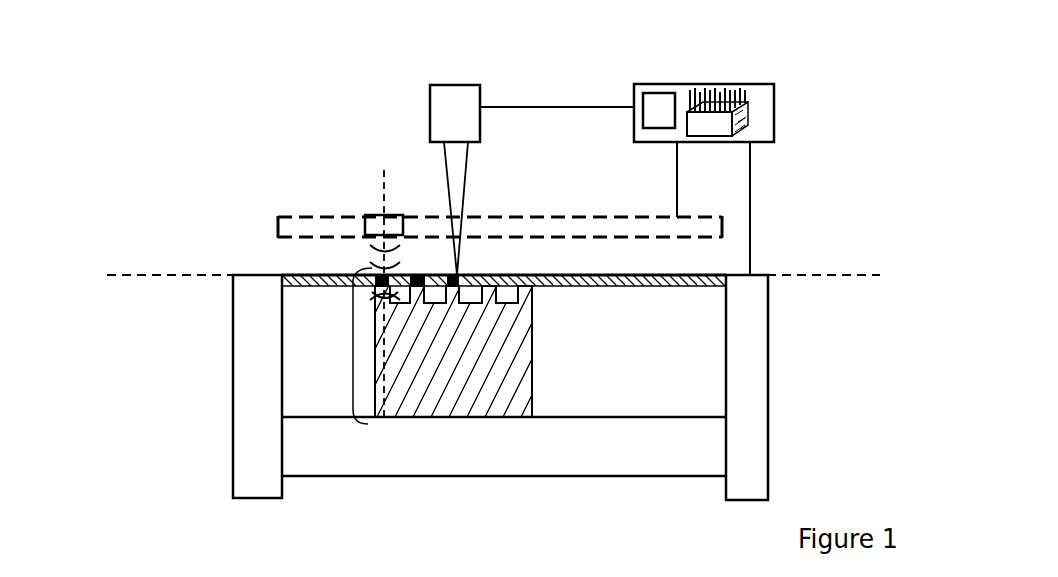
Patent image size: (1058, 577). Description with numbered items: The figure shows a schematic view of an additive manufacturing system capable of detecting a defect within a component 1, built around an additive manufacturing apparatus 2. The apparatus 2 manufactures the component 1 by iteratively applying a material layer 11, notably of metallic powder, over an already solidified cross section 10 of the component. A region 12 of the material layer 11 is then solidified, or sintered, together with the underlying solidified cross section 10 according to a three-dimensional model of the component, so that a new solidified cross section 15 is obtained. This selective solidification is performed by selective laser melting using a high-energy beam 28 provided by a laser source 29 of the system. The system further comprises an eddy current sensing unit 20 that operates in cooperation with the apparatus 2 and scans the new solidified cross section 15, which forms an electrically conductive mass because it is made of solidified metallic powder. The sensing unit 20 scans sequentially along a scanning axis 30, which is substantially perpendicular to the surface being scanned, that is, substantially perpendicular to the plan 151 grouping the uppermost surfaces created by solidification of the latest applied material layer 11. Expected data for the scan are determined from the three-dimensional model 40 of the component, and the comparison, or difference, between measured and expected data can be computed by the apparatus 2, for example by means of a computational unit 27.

The component 1 is at (403, 431).
The additive manufacturing apparatus 2 is at (203, 122).
The solidified cross section 10 is at (510, 335).
The material layer 11 is at (297, 275).
The region of the material layer 12 is at (455, 273).
The new solidified cross section 15 is at (353, 343).
The eddy current sensing unit 20 is at (375, 225).
The computational unit 27 is at (657, 108).
The high-energy beam 28 is at (458, 192).
The laser source 29 is at (457, 107).
The scanning axis 30 is at (382, 193).
The 3D model 40 is at (743, 85).
The plan 151 is at (165, 273).